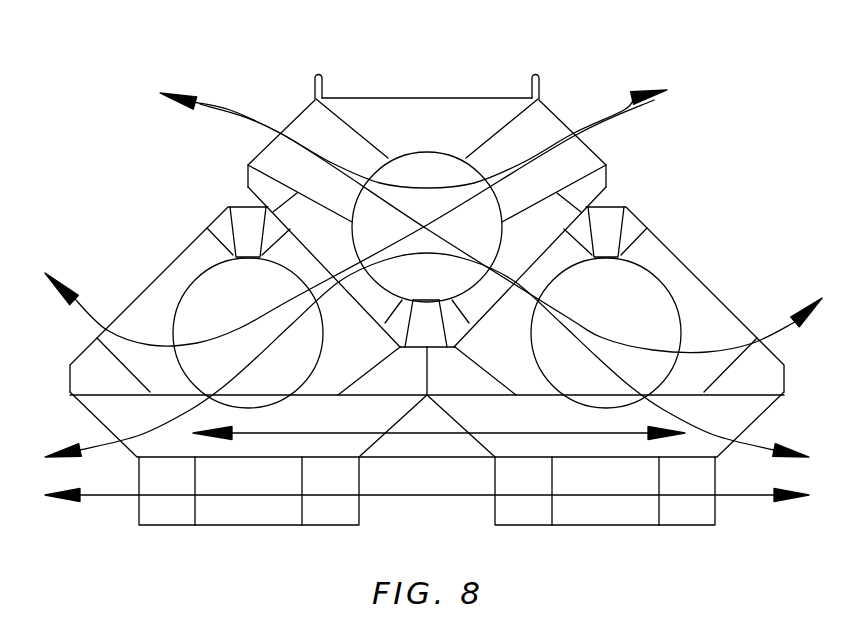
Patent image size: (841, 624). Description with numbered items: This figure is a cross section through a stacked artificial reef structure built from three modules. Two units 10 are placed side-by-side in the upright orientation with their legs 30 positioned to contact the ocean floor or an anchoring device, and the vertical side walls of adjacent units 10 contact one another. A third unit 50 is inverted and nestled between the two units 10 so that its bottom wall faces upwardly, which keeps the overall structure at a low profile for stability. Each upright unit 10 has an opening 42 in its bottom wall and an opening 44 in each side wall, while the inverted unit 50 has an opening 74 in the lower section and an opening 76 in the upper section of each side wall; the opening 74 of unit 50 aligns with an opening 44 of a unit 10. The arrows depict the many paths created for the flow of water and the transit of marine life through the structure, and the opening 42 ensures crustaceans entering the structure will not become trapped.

The unit 10 is at (140, 203).
The legs 30 is at (302, 525).
The opening 42 is at (100, 410).
The opening 44 is at (180, 263).
The unit 50 is at (500, 77).
The opening 74 is at (307, 123).
The opening 76 is at (300, 212).